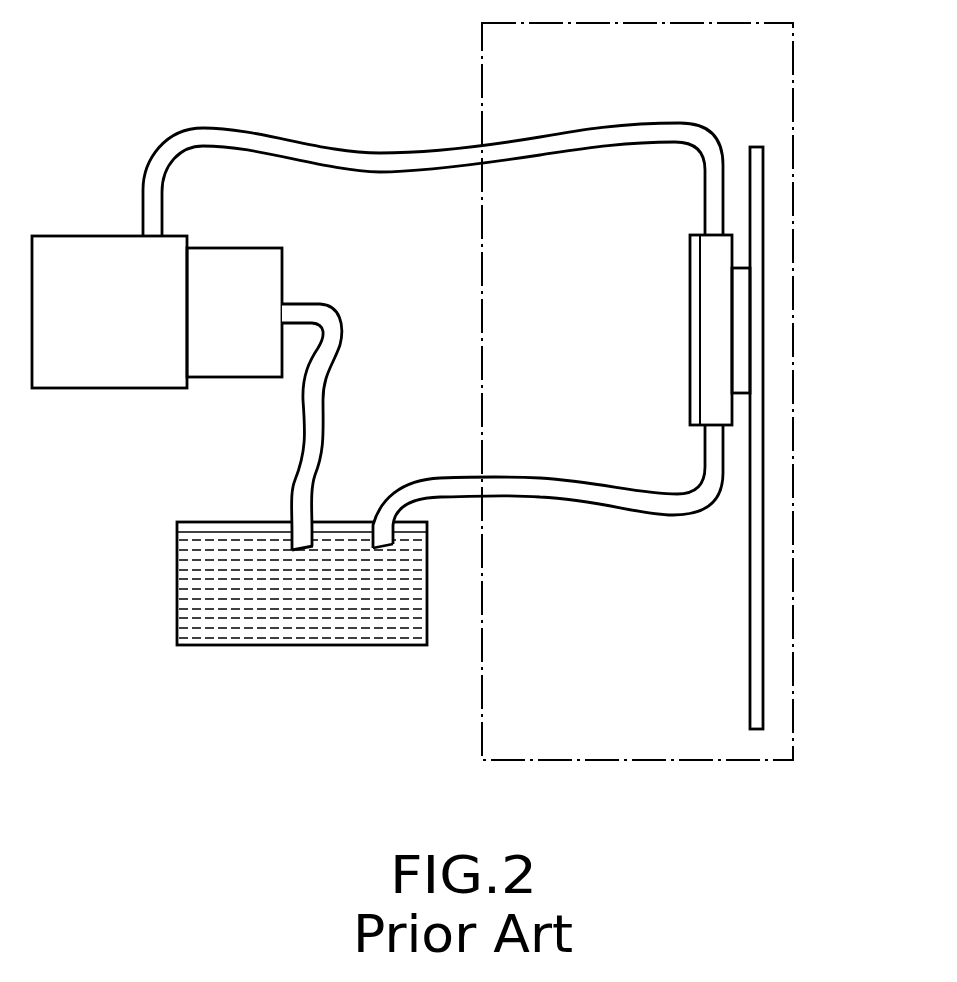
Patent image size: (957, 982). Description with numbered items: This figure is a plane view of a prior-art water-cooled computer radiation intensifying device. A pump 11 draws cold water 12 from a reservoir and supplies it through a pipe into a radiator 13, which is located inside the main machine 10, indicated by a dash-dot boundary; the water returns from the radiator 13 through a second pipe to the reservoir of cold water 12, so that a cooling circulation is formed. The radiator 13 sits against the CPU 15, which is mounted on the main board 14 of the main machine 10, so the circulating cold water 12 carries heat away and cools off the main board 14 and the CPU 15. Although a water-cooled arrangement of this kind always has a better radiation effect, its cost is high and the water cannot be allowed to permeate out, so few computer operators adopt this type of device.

The main machine 10 is at (793, 88).
The pump 11 is at (71, 371).
The cold water 12 is at (190, 584).
The radiator 13 is at (710, 305).
The main board 14 is at (757, 448).
The CPU 15 is at (740, 292).